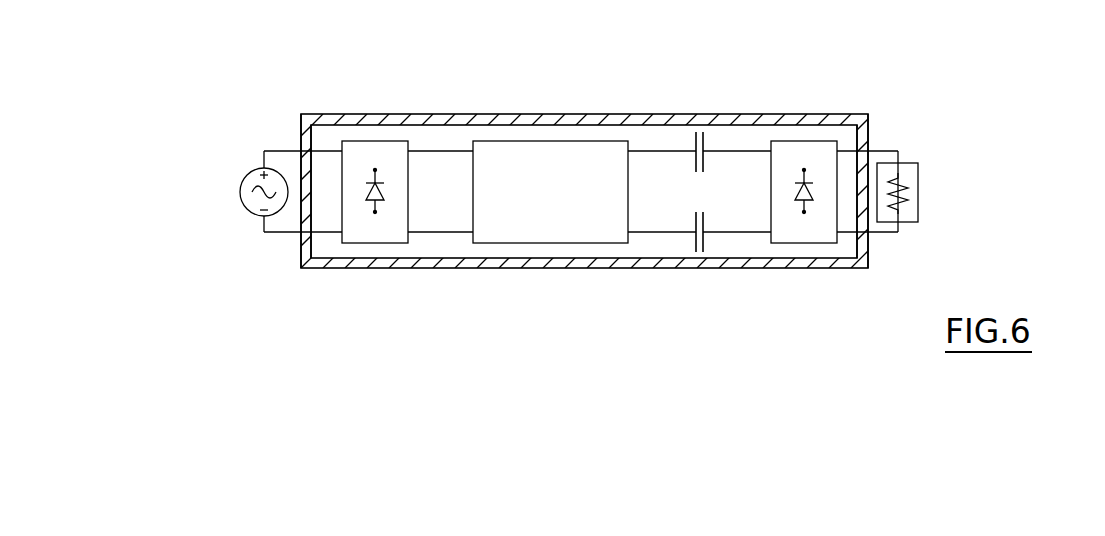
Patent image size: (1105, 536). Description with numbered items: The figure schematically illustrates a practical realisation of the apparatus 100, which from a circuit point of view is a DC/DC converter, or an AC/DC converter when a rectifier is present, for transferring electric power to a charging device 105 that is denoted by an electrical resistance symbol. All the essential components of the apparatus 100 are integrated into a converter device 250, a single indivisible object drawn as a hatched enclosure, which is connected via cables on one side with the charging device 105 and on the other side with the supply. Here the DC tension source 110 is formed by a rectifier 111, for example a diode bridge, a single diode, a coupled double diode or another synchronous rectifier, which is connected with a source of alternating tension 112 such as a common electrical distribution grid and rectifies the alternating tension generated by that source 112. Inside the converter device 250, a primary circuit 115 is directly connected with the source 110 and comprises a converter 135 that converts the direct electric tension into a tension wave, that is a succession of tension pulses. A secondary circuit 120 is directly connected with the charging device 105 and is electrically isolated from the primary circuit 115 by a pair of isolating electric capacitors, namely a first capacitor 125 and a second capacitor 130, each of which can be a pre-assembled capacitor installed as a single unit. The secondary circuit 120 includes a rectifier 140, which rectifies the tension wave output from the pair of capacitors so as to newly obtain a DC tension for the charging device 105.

The apparatus 100 is at (596, 103).
The charging device 105 is at (910, 175).
The DC tension source 110 is at (297, 130).
The rectifier 111 is at (367, 148).
The source of alternating tension 112 is at (247, 209).
The primary circuit 115 is at (455, 130).
The secondary circuit 120 is at (787, 128).
The first capacitor 125 is at (707, 124).
The second capacitor 130 is at (705, 262).
The converter 135 is at (582, 230).
The rectifier 140 is at (818, 150).
The converter device 250 is at (392, 262).